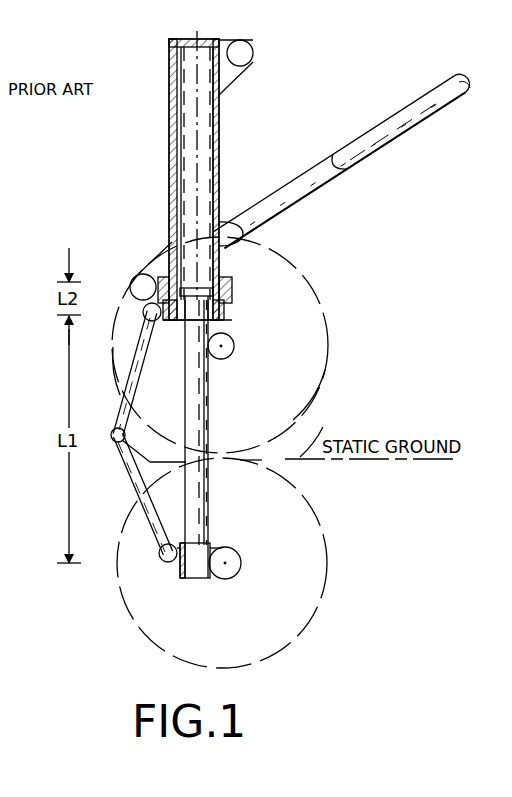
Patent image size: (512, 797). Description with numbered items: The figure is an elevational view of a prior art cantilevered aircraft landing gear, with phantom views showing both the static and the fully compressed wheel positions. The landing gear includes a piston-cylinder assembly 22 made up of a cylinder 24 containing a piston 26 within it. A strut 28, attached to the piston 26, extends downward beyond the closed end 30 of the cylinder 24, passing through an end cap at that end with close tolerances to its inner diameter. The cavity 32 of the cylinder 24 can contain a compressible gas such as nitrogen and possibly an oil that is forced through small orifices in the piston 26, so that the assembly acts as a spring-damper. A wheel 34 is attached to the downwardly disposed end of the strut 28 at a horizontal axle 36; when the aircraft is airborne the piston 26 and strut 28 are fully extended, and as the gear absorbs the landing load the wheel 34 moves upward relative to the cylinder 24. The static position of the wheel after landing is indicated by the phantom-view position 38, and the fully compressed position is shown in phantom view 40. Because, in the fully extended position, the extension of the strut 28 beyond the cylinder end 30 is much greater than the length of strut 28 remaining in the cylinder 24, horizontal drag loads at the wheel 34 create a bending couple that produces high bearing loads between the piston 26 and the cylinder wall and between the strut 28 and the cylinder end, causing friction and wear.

The piston-cylinder assembly 22 is at (135, 268).
The cylinder 24 is at (218, 133).
The piston 26 is at (220, 257).
The strut 28 is at (208, 392).
The closed end of the cylinder 30 is at (227, 317).
The cavity of the cylinder 32 is at (197, 147).
The wheel 34 is at (314, 506).
The horizontal axle 36 is at (228, 567).
The static wheel position 38 is at (325, 393).
The fully compressed wheel position 40 is at (327, 333).